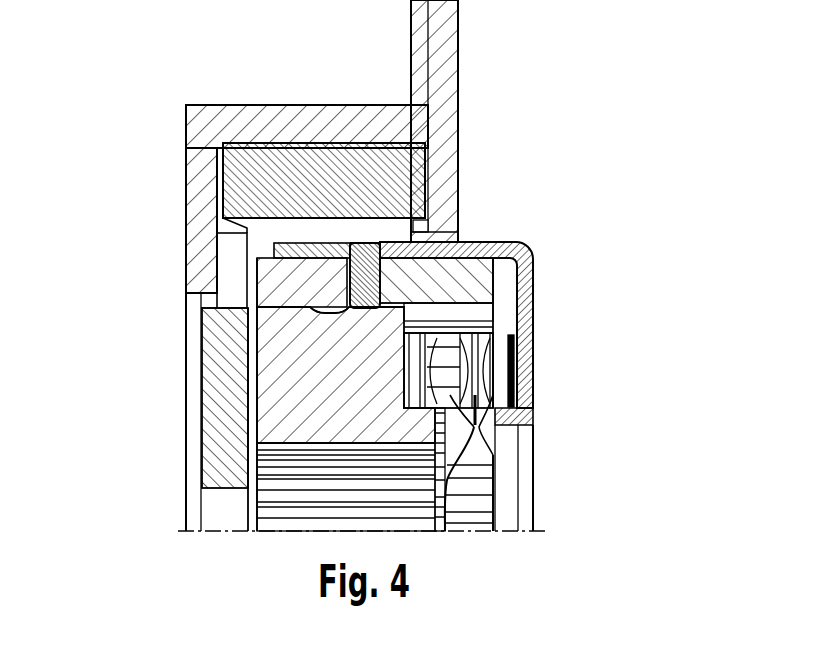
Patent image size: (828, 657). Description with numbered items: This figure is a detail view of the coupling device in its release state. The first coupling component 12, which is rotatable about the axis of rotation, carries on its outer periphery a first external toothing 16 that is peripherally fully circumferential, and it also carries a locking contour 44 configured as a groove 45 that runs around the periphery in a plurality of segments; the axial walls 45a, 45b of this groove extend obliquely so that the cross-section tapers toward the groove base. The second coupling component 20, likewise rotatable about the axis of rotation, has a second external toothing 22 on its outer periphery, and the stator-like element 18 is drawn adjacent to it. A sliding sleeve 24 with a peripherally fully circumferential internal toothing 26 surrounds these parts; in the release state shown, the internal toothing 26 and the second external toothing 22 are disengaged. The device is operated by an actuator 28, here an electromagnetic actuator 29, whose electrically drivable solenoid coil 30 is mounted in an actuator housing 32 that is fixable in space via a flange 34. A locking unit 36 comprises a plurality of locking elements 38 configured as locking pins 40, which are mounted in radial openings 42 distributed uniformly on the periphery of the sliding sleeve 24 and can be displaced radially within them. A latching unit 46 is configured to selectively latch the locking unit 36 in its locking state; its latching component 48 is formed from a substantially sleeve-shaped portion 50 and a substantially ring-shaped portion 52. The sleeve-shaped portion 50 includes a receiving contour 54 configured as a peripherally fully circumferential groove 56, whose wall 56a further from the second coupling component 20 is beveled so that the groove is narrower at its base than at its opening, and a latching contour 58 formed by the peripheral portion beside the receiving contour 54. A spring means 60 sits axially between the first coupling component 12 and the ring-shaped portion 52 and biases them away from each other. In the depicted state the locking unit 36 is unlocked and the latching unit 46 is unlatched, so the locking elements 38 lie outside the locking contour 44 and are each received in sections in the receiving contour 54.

The first coupling component 12 is at (283, 392).
The first external toothing 16 is at (278, 298).
The stator 18 is at (309, 497).
The second coupling component 20 is at (222, 452).
The second external toothing 22 is at (236, 310).
The sliding sleeve 24 is at (434, 265).
The internal toothing 26 is at (480, 314).
The actuator 28 is at (296, 265).
The electromagnetic actuator 29 is at (164, 85).
The solenoid coil 30 is at (372, 200).
The actuator housing 32 is at (218, 128).
The flange 34 is at (440, 32).
The locking unit 36 is at (482, 221).
The locking elements 38 is at (501, 201).
The locking pins 40 is at (388, 238).
The radial openings 42 is at (462, 322).
The locking contour 44 is at (207, 352).
The groove 45 is at (328, 321).
The axial wall 45a is at (311, 314).
The axial wall 45b is at (345, 313).
The latching unit 46 is at (624, 208).
The latching component 48 is at (275, 250).
The sleeve-shaped portion 50 is at (323, 240).
The ring-shaped portion 52 is at (518, 413).
The receiving contour 54 is at (334, 154).
The groove 56 is at (367, 241).
The wall 56a is at (385, 240).
The latching contour 58 is at (389, 283).
The spring means 60 is at (476, 437).